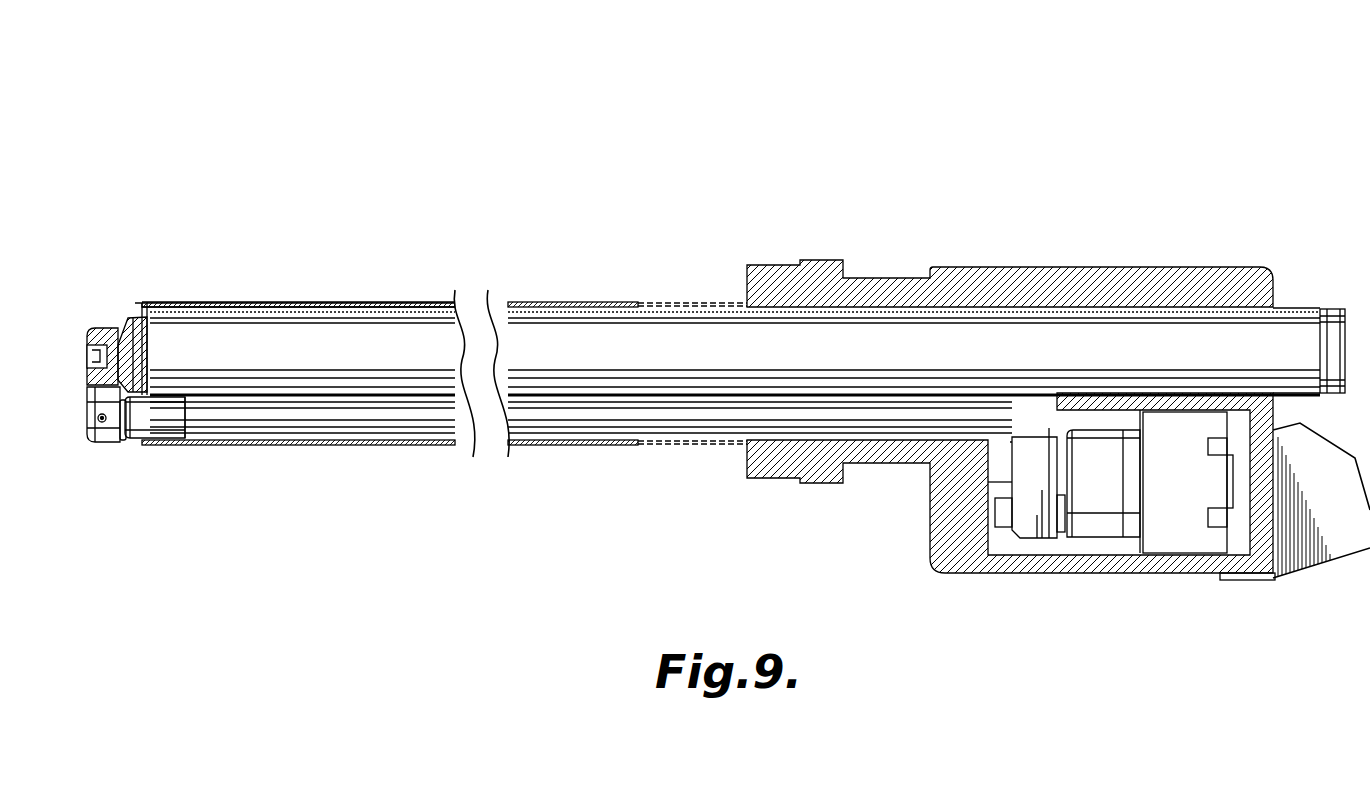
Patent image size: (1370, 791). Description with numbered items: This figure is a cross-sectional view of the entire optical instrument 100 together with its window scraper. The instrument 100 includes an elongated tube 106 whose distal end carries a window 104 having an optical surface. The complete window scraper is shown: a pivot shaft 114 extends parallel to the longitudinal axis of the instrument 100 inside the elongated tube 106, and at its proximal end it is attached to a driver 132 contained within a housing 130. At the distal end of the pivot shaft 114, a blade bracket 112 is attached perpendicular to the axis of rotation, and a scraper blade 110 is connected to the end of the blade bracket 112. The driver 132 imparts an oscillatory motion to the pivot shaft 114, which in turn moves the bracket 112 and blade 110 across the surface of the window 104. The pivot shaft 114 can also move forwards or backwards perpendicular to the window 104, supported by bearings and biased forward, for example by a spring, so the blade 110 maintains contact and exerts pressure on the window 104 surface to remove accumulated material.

The optical instrument 100 is at (232, 146).
The window 104 is at (133, 315).
The elongated tube 106 is at (330, 302).
The scraper blade 110 is at (107, 328).
The blade bracket 112 is at (103, 443).
The pivot shaft 114 is at (373, 423).
The housing 130 is at (1115, 575).
The driver 132 is at (1185, 540).